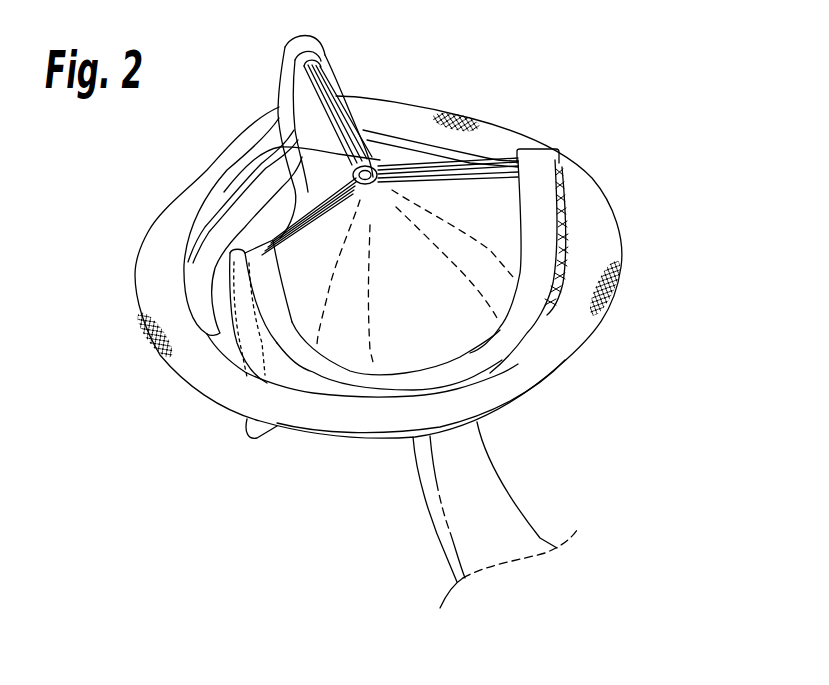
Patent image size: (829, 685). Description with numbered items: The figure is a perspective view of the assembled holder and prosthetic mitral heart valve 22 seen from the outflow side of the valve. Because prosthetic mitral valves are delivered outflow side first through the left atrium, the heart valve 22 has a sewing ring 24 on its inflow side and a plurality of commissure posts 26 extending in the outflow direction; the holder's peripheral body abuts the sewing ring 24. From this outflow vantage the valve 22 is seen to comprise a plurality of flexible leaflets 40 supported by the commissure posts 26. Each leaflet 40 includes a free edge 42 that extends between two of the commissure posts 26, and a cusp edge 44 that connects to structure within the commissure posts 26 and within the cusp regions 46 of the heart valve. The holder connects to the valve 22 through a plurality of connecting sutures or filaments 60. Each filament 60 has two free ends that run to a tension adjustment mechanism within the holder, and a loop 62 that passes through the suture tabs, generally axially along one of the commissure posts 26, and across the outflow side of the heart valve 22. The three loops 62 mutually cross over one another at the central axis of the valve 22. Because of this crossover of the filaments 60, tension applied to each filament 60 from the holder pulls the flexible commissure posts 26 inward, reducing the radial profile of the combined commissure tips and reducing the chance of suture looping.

The prosthetic mitral heart valve 22 is at (142, 192).
The sewing ring 24 is at (134, 262).
The commissure posts 26 is at (215, 257).
The flexible leaflets 40 is at (414, 274).
The free edge 42 is at (378, 163).
The cusp edge 44 is at (457, 327).
The cusp regions 46 is at (438, 372).
The connecting sutures or filaments 60 is at (370, 172).
The loop 62 is at (290, 27).